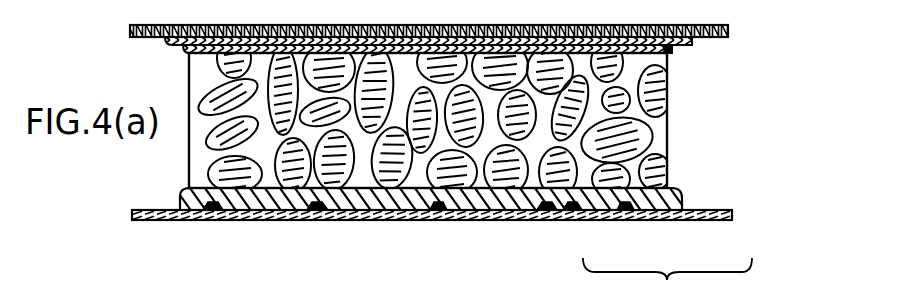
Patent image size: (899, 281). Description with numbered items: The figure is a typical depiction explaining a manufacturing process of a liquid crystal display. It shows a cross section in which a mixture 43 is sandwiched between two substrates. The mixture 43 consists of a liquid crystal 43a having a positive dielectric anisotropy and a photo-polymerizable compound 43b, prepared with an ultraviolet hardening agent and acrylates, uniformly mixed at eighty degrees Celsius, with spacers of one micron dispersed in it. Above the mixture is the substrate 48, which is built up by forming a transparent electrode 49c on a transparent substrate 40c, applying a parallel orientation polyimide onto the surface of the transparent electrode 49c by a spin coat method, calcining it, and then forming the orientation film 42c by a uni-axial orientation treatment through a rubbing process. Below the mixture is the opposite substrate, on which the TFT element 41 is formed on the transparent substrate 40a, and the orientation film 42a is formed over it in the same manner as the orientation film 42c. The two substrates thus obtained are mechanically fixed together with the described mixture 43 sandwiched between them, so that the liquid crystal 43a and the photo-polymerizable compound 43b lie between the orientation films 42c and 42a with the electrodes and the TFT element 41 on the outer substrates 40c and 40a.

The transparent substrate 40c is at (728, 31).
The transparent electrode 49c is at (692, 41).
The orientation film 42c is at (672, 49).
The substrate 48 is at (497, 51).
The mixture 43 is at (512, 117).
The liquid crystal 43a is at (667, 103).
The photo-polymerizable compound 43b is at (667, 145).
The orientation film 42a is at (660, 221).
The transparent substrate 40a is at (695, 221).
The TFT element 41 is at (258, 221).